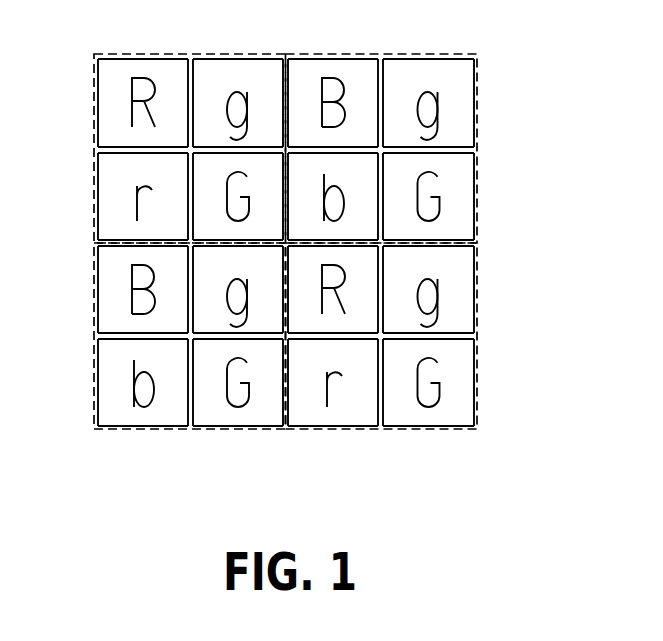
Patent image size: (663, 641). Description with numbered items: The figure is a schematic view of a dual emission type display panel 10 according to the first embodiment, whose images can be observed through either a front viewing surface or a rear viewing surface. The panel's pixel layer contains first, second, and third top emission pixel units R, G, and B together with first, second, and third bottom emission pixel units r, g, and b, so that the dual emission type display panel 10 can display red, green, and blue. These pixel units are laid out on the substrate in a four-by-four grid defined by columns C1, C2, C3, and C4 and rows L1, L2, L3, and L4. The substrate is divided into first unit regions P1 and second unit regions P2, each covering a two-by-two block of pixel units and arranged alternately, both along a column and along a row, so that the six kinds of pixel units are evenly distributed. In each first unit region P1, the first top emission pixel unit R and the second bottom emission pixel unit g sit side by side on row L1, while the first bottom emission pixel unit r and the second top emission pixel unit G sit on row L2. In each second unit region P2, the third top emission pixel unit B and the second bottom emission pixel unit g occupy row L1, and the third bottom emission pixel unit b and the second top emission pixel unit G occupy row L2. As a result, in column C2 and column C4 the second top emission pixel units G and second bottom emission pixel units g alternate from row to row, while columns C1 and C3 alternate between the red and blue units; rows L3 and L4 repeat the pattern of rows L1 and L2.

The dual emission type display panel 10 is at (586, 520).
The first unit region P1 is at (91, 51).
The second unit region P2 is at (478, 177).
The column C1 is at (188, 52).
The column C2 is at (283, 52).
The column C3 is at (378, 52).
The column C4 is at (474, 52).
The row L1 is at (93, 59).
The row L2 is at (93, 153).
The row L3 is at (93, 246).
The row L4 is at (93, 339).